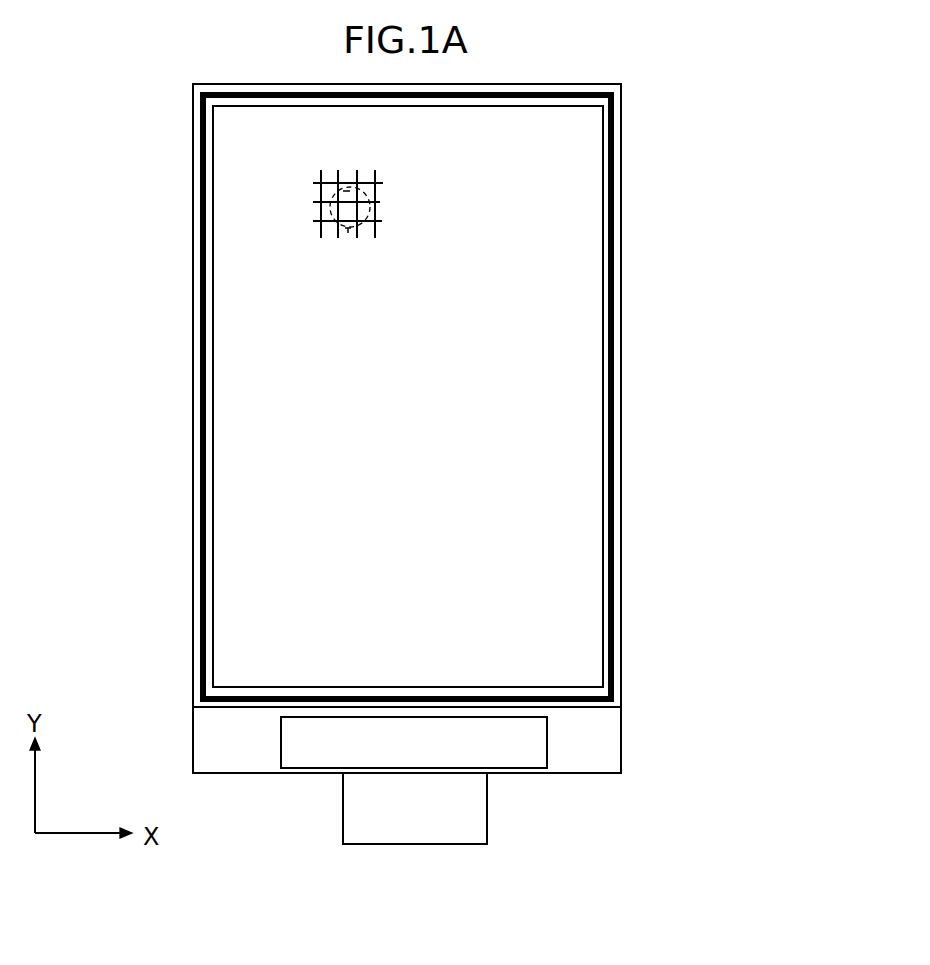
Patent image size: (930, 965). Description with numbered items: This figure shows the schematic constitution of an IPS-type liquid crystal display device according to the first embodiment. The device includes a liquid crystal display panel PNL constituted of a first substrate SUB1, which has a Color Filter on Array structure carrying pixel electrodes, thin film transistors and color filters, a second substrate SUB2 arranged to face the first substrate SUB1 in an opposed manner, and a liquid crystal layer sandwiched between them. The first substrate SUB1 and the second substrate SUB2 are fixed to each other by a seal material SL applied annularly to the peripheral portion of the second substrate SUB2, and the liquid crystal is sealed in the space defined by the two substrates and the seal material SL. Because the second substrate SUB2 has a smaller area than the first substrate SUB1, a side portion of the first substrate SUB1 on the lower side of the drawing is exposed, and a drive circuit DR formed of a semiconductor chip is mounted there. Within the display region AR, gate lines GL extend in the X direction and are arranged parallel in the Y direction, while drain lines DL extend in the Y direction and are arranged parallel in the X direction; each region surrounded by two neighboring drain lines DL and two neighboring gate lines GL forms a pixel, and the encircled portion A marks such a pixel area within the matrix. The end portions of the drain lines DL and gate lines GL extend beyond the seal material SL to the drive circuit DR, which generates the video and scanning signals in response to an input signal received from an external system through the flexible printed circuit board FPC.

The liquid crystal display panel PNL is at (633, 168).
The display region AR is at (593, 318).
The seal material SL is at (613, 463).
The second substrate SUB2 is at (622, 547).
The first substrate SUB1 is at (623, 747).
The drive circuit DR is at (300, 760).
The flexible printed circuit board FPC is at (486, 798).
The drain lines DL is at (380, 183).
The gate lines GL is at (382, 223).
The pixel region A is at (350, 232).